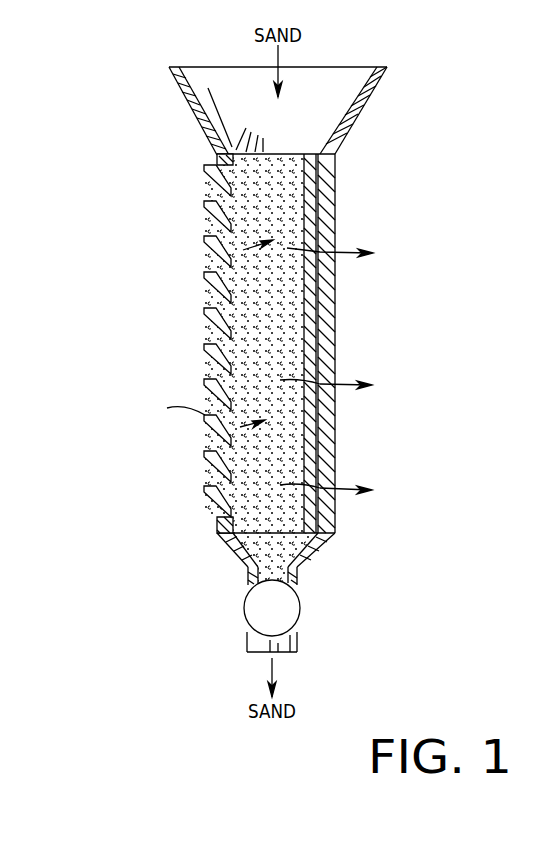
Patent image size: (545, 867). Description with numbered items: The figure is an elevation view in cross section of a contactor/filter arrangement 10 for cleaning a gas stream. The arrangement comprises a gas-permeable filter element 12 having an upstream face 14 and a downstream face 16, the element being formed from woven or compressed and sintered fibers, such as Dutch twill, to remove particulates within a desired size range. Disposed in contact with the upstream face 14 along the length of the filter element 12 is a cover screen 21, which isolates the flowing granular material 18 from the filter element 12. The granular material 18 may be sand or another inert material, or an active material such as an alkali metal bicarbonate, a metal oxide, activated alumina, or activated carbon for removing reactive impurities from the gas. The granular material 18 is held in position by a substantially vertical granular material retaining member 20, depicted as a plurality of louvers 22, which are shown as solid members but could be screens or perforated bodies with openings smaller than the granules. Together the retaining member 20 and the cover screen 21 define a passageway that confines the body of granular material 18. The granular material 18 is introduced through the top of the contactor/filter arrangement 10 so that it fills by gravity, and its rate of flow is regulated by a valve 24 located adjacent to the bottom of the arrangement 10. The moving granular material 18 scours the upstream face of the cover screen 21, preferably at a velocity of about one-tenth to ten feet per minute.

The contactor/filter arrangement 10 is at (344, 282).
The gas-permeable filter element 12 is at (332, 227).
The upstream face 14 is at (313, 200).
The downstream face 16 is at (334, 428).
The granular material 18 is at (277, 178).
The granular material retaining member 20 is at (203, 272).
The cover screen 21 is at (307, 360).
The louvers 22 is at (205, 310).
The valve 24 is at (300, 612).